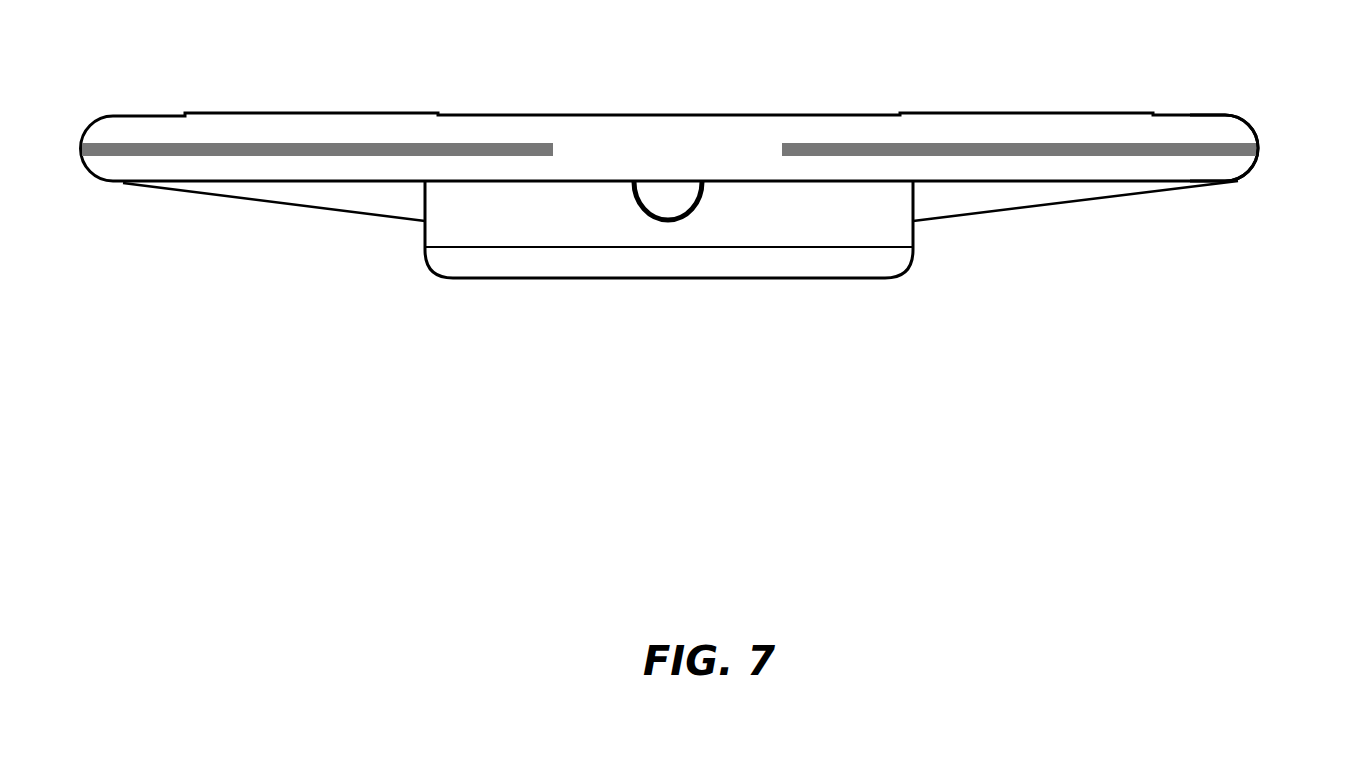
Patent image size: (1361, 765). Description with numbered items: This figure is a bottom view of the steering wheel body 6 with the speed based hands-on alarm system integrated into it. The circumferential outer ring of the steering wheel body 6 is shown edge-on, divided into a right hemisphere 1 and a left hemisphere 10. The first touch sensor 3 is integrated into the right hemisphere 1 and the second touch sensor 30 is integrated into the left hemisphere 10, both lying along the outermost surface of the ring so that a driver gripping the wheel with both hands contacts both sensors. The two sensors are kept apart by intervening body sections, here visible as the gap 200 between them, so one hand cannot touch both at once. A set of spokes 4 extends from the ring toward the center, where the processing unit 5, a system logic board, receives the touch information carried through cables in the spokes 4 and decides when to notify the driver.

The left hemisphere 10 is at (150, 116).
The right hemisphere 1 is at (1225, 120).
The second touch sensor 30 is at (373, 140).
The first touch sensor 3 is at (967, 140).
The gap between magnetic strips 200 is at (666, 140).
The set of spokes 4 is at (370, 206).
The processing unit 5 is at (668, 248).
The steering wheel body 6 is at (1179, 341).